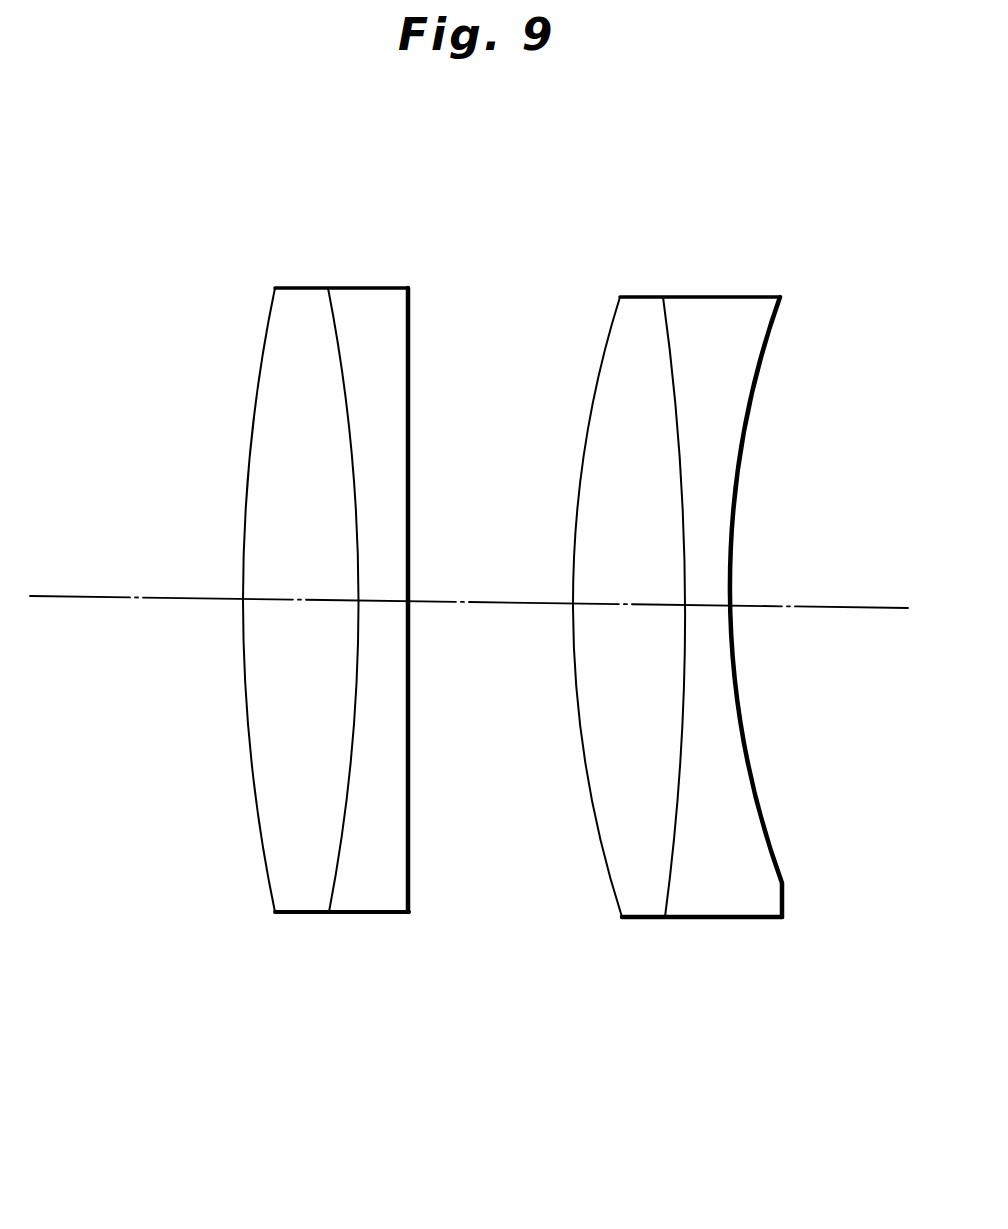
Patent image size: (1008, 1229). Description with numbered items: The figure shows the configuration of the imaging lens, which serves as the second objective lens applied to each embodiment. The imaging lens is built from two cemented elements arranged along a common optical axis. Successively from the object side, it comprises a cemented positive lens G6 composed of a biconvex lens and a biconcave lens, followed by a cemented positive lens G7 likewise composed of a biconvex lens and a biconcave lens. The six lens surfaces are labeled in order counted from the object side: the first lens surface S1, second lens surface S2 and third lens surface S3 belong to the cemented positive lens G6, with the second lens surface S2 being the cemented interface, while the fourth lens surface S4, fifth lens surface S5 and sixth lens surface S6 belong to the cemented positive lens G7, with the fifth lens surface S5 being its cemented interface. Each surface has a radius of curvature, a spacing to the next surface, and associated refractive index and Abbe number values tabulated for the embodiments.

The first lens surface S1 is at (262, 347).
The second lens surface S2 is at (337, 334).
The third lens surface S3 is at (410, 358).
The fourth lens surface S4 is at (593, 403).
The fifth lens surface S5 is at (674, 383).
The sixth lens surface S6 is at (752, 423).
The cemented positive lens G6 is at (337, 618).
The cemented positive lens G7 is at (688, 630).